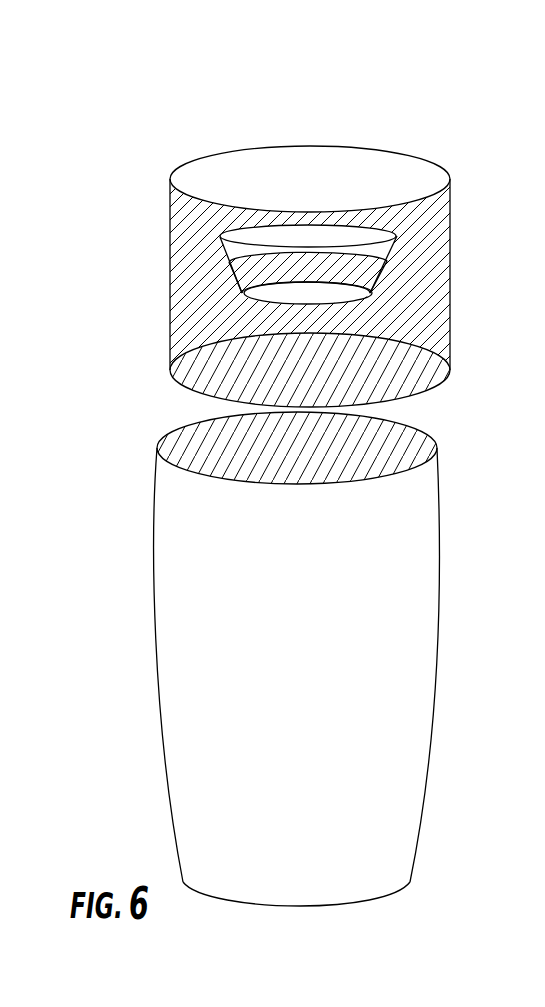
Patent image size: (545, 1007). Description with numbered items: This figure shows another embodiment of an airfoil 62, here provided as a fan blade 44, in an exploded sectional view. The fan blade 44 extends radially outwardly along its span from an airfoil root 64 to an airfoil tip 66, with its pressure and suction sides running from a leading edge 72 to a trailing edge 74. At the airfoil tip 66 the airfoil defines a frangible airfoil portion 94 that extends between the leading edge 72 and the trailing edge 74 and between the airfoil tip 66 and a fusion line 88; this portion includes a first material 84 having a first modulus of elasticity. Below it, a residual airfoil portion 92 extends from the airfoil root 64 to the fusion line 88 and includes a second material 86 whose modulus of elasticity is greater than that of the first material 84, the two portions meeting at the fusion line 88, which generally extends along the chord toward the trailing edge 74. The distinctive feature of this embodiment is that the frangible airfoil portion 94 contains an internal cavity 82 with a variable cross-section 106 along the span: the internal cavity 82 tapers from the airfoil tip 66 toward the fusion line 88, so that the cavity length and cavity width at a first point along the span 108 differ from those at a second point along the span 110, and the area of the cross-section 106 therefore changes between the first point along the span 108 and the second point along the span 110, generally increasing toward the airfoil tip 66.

The fan blade 44 is at (273, 491).
The airfoil 62 is at (273, 240).
The airfoil root 64 is at (313, 905).
The airfoil tip 66 is at (405, 158).
The leading edge 72 is at (153, 532).
The trailing edge 74 is at (438, 672).
The internal cavity 82 is at (337, 193).
The first material 84 is at (446, 340).
The second material 86 is at (437, 470).
The fusion line 88 is at (176, 372).
The residual airfoil portion 92 is at (267, 683).
The frangible airfoil portion 94 is at (136, 228).
The cross-section 106 is at (288, 262).
The first point along the span 108 is at (380, 278).
The second point along the span 110 is at (388, 250).